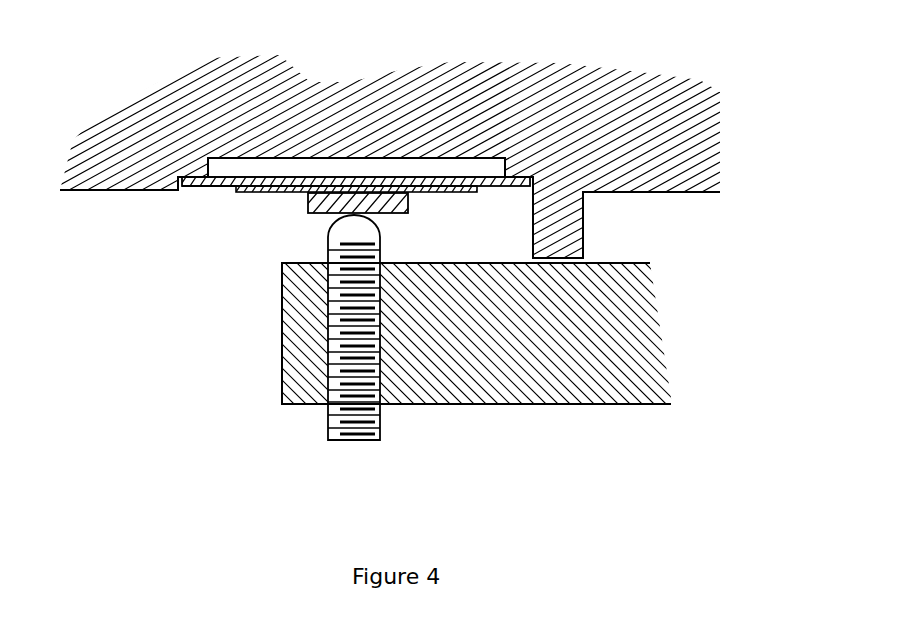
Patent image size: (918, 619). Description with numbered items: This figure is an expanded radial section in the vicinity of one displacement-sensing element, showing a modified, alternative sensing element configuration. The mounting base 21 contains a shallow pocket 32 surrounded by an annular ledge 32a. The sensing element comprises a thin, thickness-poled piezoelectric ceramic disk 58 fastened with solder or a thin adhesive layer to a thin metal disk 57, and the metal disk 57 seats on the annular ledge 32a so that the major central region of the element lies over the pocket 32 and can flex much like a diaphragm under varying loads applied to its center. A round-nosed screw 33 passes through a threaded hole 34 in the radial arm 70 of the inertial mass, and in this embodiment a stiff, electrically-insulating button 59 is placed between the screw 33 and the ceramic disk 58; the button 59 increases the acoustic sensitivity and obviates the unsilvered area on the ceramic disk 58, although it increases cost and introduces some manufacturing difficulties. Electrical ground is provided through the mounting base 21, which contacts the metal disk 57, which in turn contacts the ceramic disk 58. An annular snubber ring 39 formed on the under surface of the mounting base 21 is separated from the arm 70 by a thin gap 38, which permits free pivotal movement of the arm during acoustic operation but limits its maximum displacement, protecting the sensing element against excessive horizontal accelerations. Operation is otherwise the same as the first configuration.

The mounting base 21 is at (528, 115).
The pocket 32 is at (252, 165).
The annular ledge 32a is at (198, 177).
The round-nosed screw 33 is at (382, 238).
The threaded hole 34 is at (328, 368).
The thin gap 38 is at (585, 259).
The annular snubber ring 39 is at (578, 217).
The metal disk 57 is at (215, 186).
The piezoelectric ceramic disk 58 is at (270, 192).
The electrically-insulating button 59 is at (312, 213).
The radial arm 70 is at (480, 404).